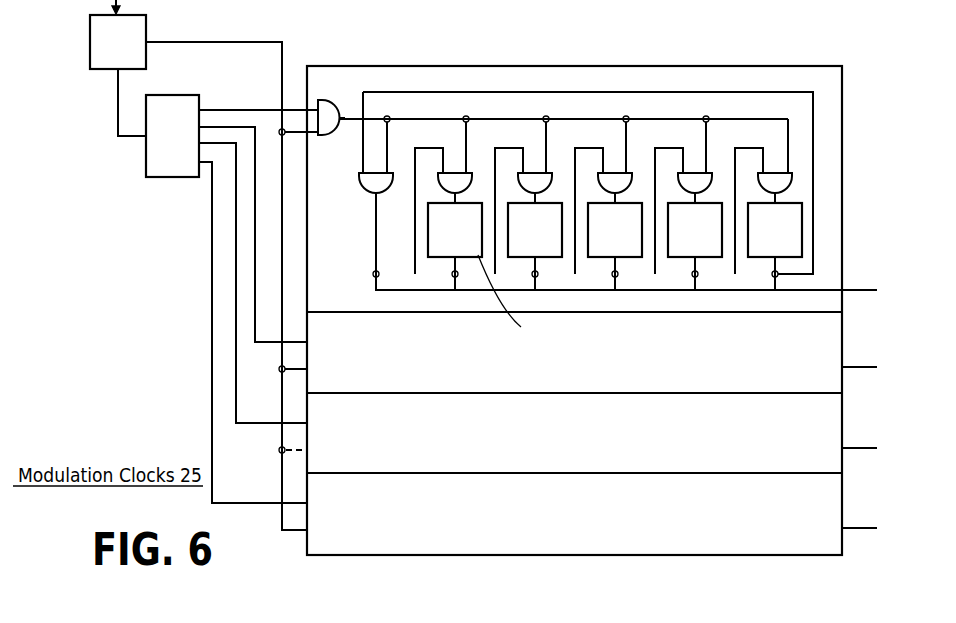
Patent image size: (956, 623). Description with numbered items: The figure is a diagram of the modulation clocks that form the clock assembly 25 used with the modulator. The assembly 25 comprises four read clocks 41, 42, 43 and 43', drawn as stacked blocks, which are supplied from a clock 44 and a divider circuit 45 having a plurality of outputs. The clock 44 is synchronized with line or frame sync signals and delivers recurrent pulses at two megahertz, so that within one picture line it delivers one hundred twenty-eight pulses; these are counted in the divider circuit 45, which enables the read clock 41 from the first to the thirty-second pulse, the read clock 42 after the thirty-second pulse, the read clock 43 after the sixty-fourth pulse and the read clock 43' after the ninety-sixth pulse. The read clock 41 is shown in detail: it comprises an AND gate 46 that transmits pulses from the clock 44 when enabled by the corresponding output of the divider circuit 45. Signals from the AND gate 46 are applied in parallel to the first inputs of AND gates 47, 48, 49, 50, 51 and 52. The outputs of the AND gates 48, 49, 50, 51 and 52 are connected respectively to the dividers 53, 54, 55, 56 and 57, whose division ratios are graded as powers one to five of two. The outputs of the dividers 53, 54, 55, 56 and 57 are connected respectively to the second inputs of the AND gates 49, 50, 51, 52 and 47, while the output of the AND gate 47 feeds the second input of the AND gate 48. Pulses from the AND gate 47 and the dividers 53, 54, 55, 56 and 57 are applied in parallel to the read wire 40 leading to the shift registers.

The clock assembly 25 is at (826, 556).
The wire 40 is at (857, 288).
The read clock 41 is at (339, 281).
The read clock 42 is at (339, 370).
The read clock 43 is at (574, 433).
The read clock 43' is at (574, 514).
The clock 44 is at (137, 31).
The divider circuit 45 is at (168, 193).
The AND gate 46 is at (327, 100).
The AND gate 47 is at (369, 184).
The AND gate 48 is at (448, 184).
The AND gate 49 is at (528, 184).
The AND gate 50 is at (608, 184).
The AND gate 51 is at (688, 184).
The AND gate 52 is at (768, 184).
The divider 53 is at (450, 250).
The divider 54 is at (530, 250).
The divider 55 is at (610, 250).
The divider 56 is at (690, 250).
The divider 57 is at (770, 250).